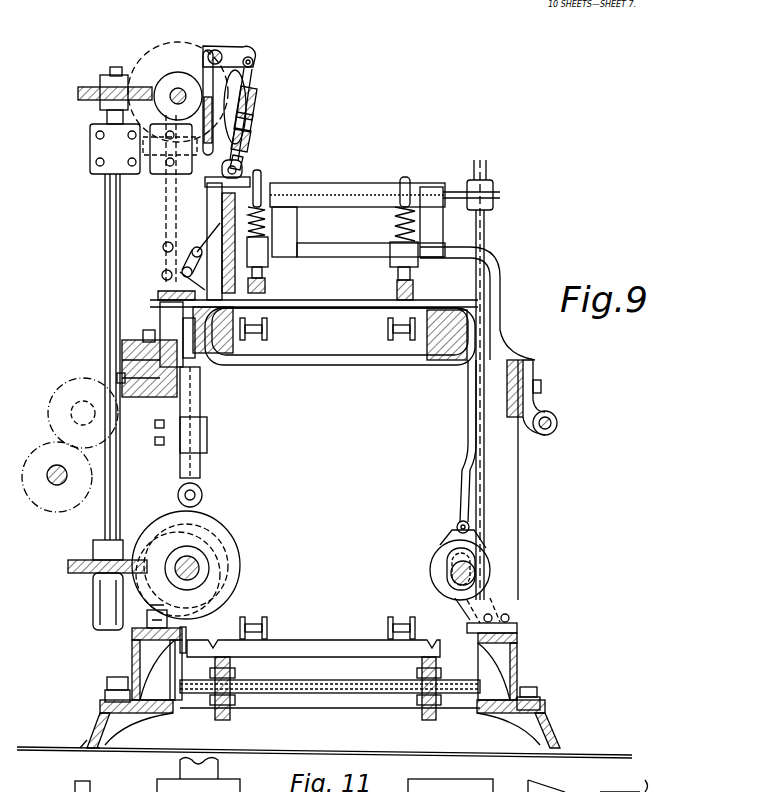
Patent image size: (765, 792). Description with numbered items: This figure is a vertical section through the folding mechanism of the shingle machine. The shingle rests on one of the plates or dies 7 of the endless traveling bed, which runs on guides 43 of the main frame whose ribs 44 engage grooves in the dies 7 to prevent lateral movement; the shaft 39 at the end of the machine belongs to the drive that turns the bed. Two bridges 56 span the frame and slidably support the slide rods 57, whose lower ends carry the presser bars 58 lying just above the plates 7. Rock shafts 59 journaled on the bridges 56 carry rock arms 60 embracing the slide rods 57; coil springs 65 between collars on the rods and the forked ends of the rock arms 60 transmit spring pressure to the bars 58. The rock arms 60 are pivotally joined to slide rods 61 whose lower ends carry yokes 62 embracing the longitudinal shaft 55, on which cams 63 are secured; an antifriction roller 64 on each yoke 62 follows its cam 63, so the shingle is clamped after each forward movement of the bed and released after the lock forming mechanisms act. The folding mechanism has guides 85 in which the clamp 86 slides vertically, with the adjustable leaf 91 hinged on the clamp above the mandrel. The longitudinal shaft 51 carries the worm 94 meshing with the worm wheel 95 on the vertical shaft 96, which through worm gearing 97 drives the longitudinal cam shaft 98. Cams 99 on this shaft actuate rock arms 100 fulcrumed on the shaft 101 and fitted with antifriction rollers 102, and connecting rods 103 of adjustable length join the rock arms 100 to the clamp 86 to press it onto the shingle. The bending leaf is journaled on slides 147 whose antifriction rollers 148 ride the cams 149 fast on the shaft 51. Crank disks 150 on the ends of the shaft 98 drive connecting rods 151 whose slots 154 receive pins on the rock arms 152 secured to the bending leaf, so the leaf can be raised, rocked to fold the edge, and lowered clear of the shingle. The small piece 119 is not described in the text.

In FIG. 9, the plates or dies 7 is at (325, 310).
In FIG. 9, the shafts 39 is at (52, 481).
In FIG. 9, the guides 43 is at (467, 326).
In FIG. 9, the ribs 44 is at (455, 307).
In FIG. 9, the longitudinal shaft 51 is at (205, 560).
In FIG. 9, the longitudinal shaft 55 is at (478, 581).
In FIG. 9, the bridges 56 is at (497, 271).
In FIG. 9, the slide rods 57 is at (262, 176).
In FIG. 9, the presser bars 58 is at (263, 286).
In FIG. 9, the rock shafts 59 is at (344, 196).
In FIG. 9, the rock arms 60 is at (400, 183).
In FIG. 9, the slide rods 61 is at (460, 469).
In FIG. 9, the yokes 62 is at (481, 553).
In FIG. 9, the cams 63 is at (478, 554).
In FIG. 9, the antifriction roller 64 is at (470, 523).
In FIG. 9, the coil springs 65 is at (414, 225).
In FIG. 9, the guides 85 is at (140, 193).
In FIG. 9, the clamp 86 is at (217, 211).
In FIG. 11, the adjustable leaf 91 is at (659, 774).
In FIG. 9, the worm 94 is at (210, 575).
In FIG. 9, the worm wheel 95 is at (72, 573).
In FIG. 9, the vertical shaft 96 is at (103, 331).
In FIG. 9, the worm gearing 97 is at (88, 88).
In FIG. 9, the longitudinal cam shaft 98 is at (165, 102).
In FIG. 9, the cams 99 is at (240, 132).
In FIG. 9, the rock arms 100 is at (230, 50).
In FIG. 9, the shaft 101 is at (217, 49).
In FIG. 9, the antifriction rollers 102 is at (180, 54).
In FIG. 9, the connecting rods 103 is at (253, 97).
In FIG. 11, the part 119 is at (619, 782).
In FIG. 9, the slides 147 is at (200, 404).
In FIG. 9, the antifriction rollers 148 is at (204, 494).
In FIG. 9, the cams 149 is at (238, 591).
In FIG. 9, the crank disks 150 is at (138, 66).
In FIG. 9, the connecting rods 151 is at (162, 230).
In FIG. 9, the rock arms 152 is at (160, 289).
In FIG. 9, the slots 154 is at (162, 252).